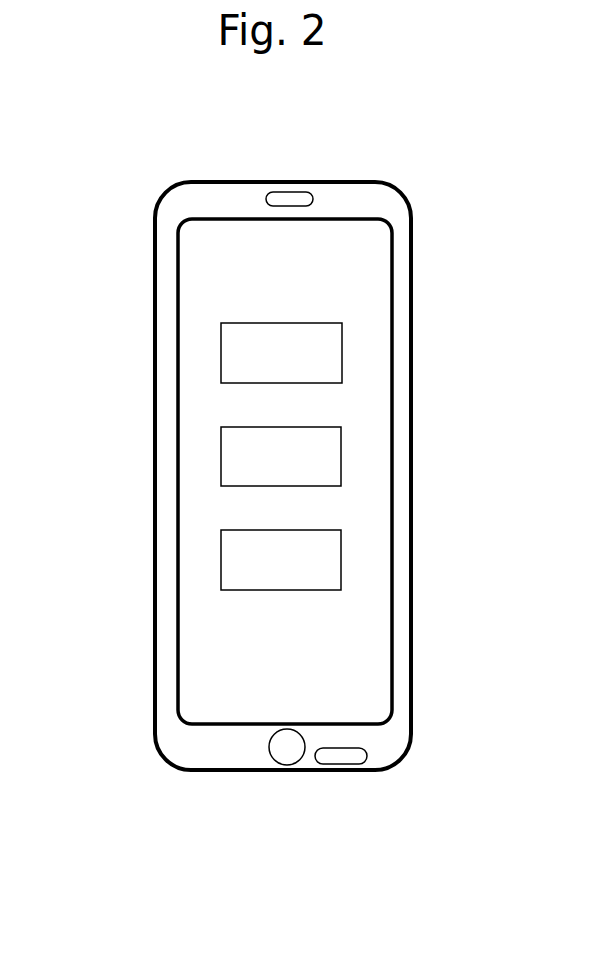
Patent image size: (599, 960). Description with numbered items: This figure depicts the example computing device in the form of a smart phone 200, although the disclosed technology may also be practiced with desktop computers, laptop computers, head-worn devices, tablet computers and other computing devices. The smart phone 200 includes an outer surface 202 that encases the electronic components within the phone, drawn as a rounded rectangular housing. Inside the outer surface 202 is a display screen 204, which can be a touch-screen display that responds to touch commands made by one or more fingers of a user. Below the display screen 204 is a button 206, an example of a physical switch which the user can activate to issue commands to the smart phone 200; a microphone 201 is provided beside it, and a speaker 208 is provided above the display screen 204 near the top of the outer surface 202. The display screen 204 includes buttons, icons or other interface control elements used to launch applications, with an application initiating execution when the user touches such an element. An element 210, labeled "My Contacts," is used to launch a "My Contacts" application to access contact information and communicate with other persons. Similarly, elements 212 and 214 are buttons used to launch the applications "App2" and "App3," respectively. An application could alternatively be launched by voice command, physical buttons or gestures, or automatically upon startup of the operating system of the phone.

The smart phone 200 is at (150, 170).
The microphone 201 is at (347, 767).
The outer surface 202 is at (153, 348).
The display screen 204 is at (195, 263).
The button 206 is at (290, 752).
The speaker 208 is at (297, 198).
The element 210 is at (326, 343).
The element 212 is at (316, 472).
The element 214 is at (328, 555).